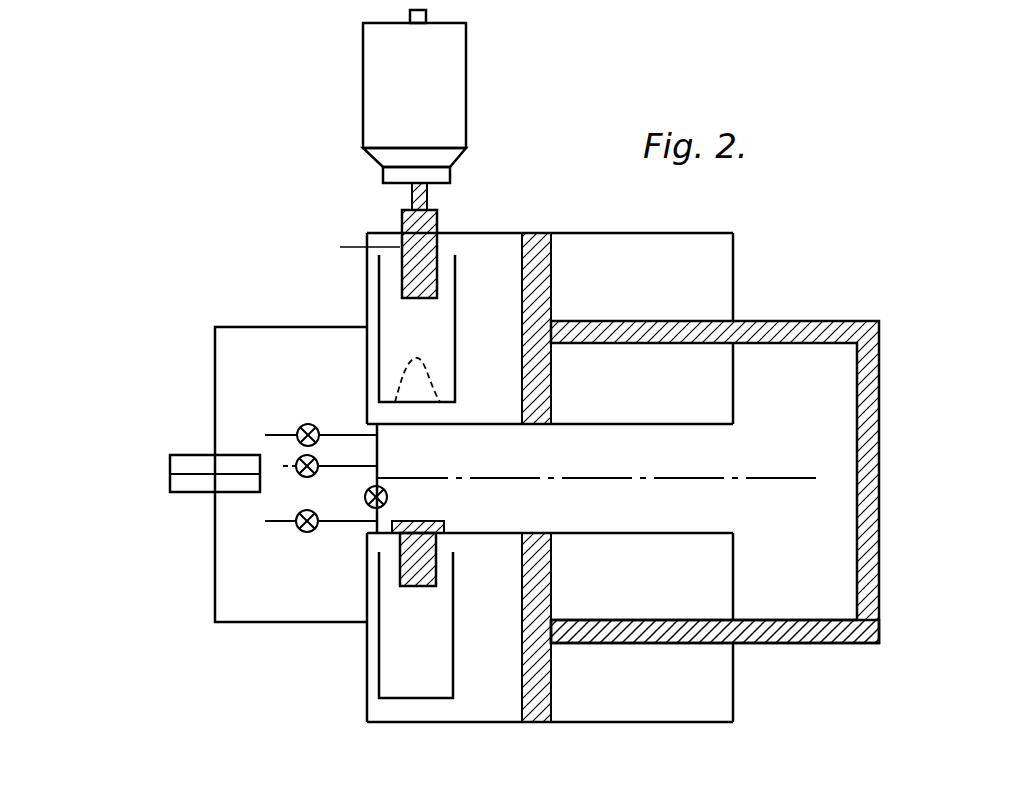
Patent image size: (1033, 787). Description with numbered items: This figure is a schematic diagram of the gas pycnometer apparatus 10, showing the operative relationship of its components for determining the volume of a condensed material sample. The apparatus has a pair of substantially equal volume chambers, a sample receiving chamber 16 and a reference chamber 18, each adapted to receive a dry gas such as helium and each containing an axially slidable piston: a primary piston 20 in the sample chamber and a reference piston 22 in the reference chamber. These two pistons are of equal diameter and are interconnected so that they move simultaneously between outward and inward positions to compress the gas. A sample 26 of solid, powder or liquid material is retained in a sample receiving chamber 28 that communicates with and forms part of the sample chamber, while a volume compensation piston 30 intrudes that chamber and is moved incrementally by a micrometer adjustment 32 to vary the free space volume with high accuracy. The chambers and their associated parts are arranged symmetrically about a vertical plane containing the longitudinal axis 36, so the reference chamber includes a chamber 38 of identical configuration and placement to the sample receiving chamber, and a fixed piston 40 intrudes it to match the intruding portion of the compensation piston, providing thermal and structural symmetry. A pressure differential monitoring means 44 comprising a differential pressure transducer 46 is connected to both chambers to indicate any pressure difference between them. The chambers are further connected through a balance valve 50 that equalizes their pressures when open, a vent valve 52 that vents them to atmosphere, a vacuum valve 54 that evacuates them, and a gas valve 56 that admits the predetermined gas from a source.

The gas pycnometer apparatus 10 is at (718, 220).
The sample receiving chamber 16 is at (510, 239).
The reference chamber 18 is at (485, 716).
The primary piston 20 is at (549, 256).
The reference piston 22 is at (551, 700).
The sample 26 is at (432, 373).
The sample receiving chamber 28 is at (385, 316).
The volume compensation piston 30 is at (437, 220).
The micrometer adjustment 32 is at (363, 115).
The longitudinal axis 36 is at (752, 483).
The chamber 38 is at (381, 680).
The fixed piston 40 is at (400, 570).
The pressure differential monitoring means 44 is at (205, 495).
The differential pressure transducer 46 is at (194, 455).
The balance valve 50 is at (382, 487).
The vent valve 52 is at (300, 428).
The vacuum valve 54 is at (318, 461).
The gas valve 56 is at (296, 520).